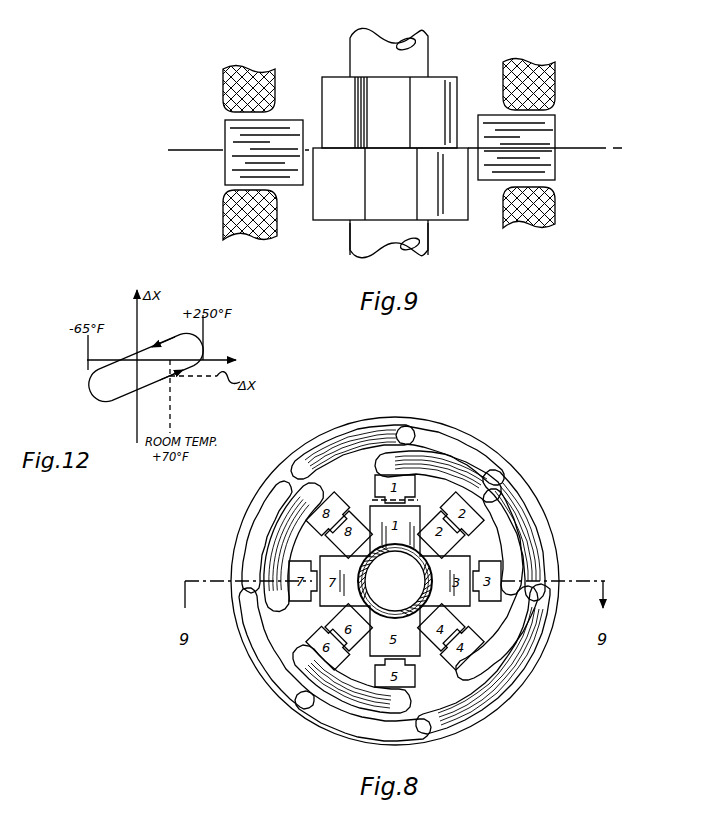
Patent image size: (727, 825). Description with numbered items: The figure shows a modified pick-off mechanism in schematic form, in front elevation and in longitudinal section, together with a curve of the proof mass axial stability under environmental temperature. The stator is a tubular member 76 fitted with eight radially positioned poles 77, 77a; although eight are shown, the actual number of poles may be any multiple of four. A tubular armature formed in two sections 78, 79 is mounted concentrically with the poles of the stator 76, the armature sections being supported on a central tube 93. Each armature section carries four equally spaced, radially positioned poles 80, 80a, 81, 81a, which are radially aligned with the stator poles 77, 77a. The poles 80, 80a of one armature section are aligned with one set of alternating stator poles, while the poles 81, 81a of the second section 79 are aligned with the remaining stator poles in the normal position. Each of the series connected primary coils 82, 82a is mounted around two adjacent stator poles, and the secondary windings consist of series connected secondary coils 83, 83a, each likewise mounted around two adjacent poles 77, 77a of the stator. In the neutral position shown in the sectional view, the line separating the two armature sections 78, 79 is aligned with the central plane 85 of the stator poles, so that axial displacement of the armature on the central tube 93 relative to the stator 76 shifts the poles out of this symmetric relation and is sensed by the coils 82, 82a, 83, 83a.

In FIG. 8, the tubular member 76 is at (481, 444).
In FIG. 8, the stator pole 77 is at (335, 667).
In FIG. 8, the stator pole 77a is at (302, 603).
In FIG. 9, the armature section 78 is at (331, 218).
In FIG. 8, the armature section 78 is at (360, 596).
In FIG. 9, the armature section 79 is at (336, 84).
In FIG. 8, the armature section 79 is at (362, 527).
In FIG. 8, the armature pole 80 is at (380, 511).
In FIG. 8, the armature pole 80a is at (462, 554).
In FIG. 8, the armature pole 81 is at (428, 568).
In FIG. 8, the armature pole 81a is at (456, 624).
In FIG. 9, the primary coil 82 is at (223, 212).
In FIG. 8, the primary coil 82 is at (369, 440).
In FIG. 8, the primary coil 82a is at (536, 546).
In FIG. 9, the secondary coil 83 is at (552, 198).
In FIG. 8, the secondary coil 83 is at (278, 530).
In FIG. 8, the secondary coil 83a is at (442, 462).
In FIG. 9, the central plane 85 is at (592, 147).
In FIG. 9, the central tube 93 is at (434, 236).
In FIG. 8, the central tube 93 is at (418, 644).